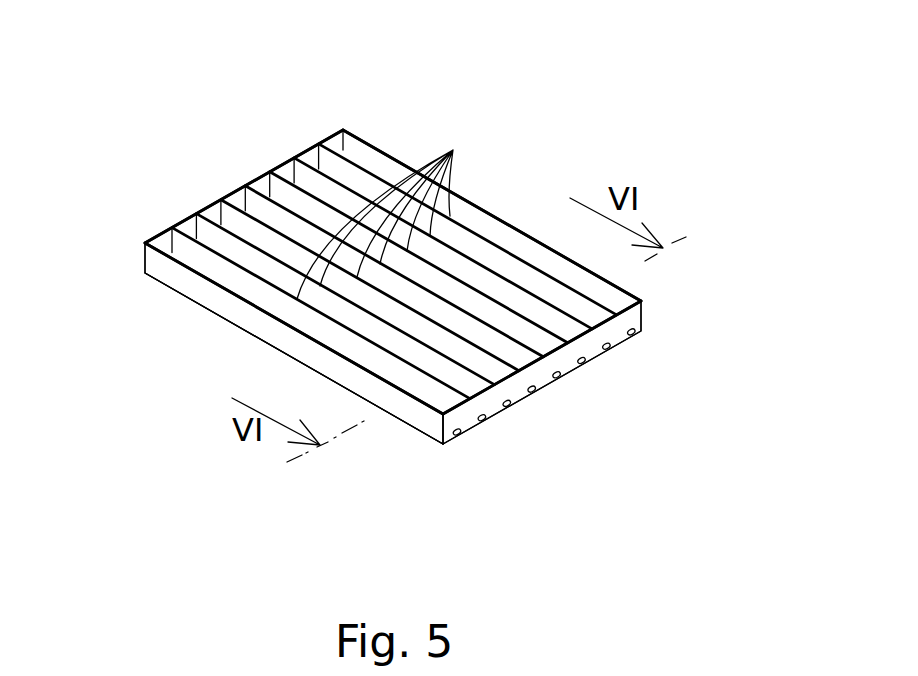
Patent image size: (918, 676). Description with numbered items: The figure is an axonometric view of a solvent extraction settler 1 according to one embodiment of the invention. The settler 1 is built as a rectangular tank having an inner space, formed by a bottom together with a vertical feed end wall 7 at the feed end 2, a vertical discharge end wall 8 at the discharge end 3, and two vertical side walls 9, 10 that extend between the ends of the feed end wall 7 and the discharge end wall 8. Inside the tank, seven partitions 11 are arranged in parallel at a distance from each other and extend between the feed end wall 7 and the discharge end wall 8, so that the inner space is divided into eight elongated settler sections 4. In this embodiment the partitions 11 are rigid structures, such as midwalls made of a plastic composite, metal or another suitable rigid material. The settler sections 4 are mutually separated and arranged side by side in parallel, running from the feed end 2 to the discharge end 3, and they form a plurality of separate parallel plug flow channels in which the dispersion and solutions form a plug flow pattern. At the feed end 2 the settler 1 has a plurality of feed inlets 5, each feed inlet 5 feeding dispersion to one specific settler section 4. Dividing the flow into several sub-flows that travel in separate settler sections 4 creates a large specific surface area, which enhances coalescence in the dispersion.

The settler 1 is at (495, 115).
The feed end 2 is at (434, 483).
The discharge end 3 is at (125, 300).
The settler sections 4 is at (345, 143).
The feed inlets 5 is at (657, 345).
The feed end wall 7 is at (537, 370).
The discharge end wall 8 is at (218, 190).
The side wall 9 is at (232, 305).
The side wall 10 is at (475, 206).
The partitions 11 is at (385, 208).